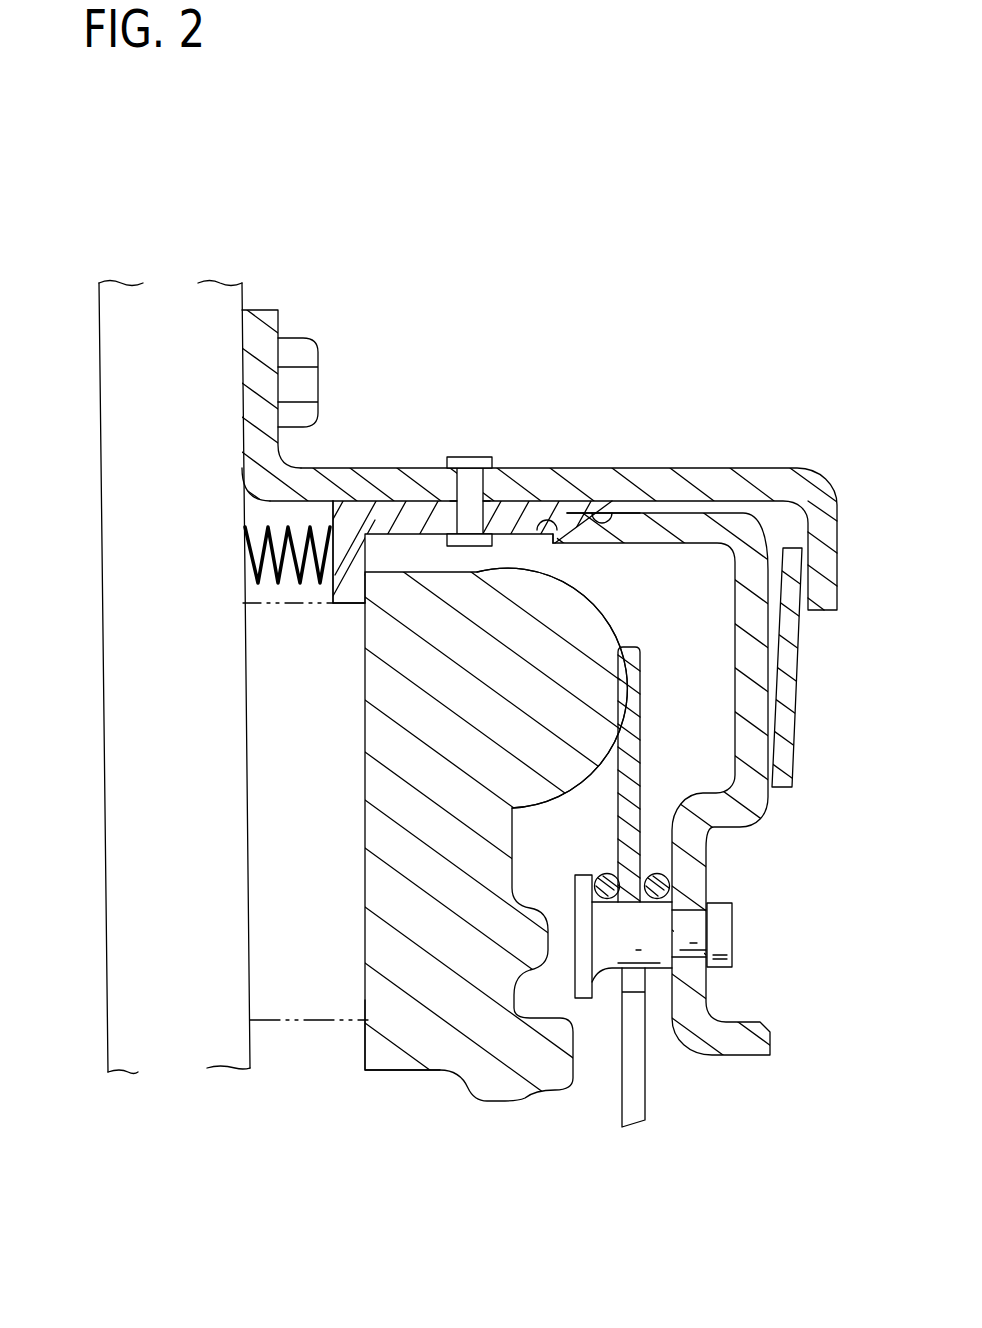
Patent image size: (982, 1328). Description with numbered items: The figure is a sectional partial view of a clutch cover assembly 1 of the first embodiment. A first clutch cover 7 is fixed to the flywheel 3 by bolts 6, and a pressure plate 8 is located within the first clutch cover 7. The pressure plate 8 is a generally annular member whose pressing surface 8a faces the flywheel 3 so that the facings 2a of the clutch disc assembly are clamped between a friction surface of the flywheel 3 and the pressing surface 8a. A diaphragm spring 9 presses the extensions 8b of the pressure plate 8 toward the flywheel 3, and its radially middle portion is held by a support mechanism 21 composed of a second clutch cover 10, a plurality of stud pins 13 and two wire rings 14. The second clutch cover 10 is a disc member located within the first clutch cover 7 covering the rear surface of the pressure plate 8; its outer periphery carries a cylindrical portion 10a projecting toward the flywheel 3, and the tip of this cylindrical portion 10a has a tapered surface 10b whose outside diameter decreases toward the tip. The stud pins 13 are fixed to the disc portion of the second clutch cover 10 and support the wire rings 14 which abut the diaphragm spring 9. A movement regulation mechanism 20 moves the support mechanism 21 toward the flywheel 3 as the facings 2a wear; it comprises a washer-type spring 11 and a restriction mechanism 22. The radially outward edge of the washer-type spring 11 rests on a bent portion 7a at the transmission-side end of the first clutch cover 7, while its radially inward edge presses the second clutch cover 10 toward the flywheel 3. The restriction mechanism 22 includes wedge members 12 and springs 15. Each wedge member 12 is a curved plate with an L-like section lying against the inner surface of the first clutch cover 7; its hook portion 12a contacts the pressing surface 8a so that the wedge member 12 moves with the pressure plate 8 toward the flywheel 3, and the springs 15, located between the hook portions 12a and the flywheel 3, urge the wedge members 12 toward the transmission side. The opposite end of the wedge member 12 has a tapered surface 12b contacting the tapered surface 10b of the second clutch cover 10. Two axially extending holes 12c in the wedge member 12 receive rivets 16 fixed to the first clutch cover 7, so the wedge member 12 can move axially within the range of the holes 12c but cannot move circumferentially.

The clutch cover assembly 1 is at (546, 734).
The facings 2a is at (260, 1022).
The flywheel 3 is at (100, 503).
The bolts 6 is at (320, 380).
The first clutch cover 7 is at (590, 478).
The bent portion 7a is at (832, 530).
The pressure plate 8 is at (453, 1013).
The pressing surface 8a is at (368, 1050).
The extensions 8b is at (578, 668).
The diaphragm spring 9 is at (645, 1105).
The second clutch cover 10 is at (733, 813).
The cylindrical portion 10a is at (636, 520).
The tapered surface 10b is at (547, 540).
The washer-type spring 11 is at (790, 662).
The wedge member 12 is at (418, 512).
The hook portion 12a is at (345, 592).
The tapered surface 12b is at (612, 515).
The holes 12c is at (512, 500).
The stud pins 13 is at (608, 948).
The wire rings 14 is at (672, 878).
The springs 15 is at (300, 537).
The rivets 16 is at (468, 457).
The movement regulation mechanism 20 is at (545, 685).
The support mechanism 21 is at (764, 945).
The restriction mechanism 22 is at (440, 392).